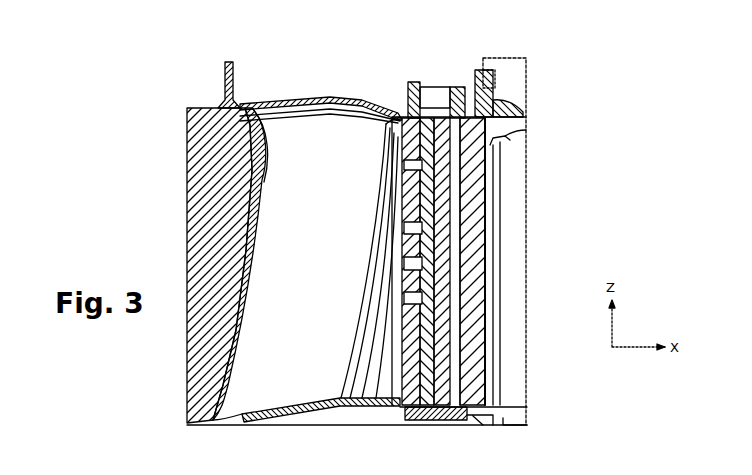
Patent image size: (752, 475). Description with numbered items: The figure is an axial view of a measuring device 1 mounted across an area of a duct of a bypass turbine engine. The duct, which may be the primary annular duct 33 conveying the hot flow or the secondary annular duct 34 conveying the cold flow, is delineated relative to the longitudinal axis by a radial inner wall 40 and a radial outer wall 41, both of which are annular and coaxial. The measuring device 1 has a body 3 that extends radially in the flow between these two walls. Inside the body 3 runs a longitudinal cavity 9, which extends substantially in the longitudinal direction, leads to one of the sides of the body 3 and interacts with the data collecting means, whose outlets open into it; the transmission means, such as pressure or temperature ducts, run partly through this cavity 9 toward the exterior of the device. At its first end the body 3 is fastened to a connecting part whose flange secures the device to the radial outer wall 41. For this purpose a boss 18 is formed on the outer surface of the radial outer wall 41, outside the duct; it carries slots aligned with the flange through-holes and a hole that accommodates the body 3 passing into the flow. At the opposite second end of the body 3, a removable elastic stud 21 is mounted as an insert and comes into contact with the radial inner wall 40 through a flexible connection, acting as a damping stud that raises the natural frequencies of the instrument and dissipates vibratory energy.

The measuring device 1 is at (485, 262).
The body 3 is at (460, 322).
The longitudinal cavity 9 is at (490, 178).
The boss 18 is at (405, 112).
The stud 21 is at (493, 405).
The primary annular duct 33 is at (183, 105).
The secondary annular duct 34 is at (240, 264).
The radial inner wall 40 is at (512, 408).
The radial outer wall 41 is at (526, 108).